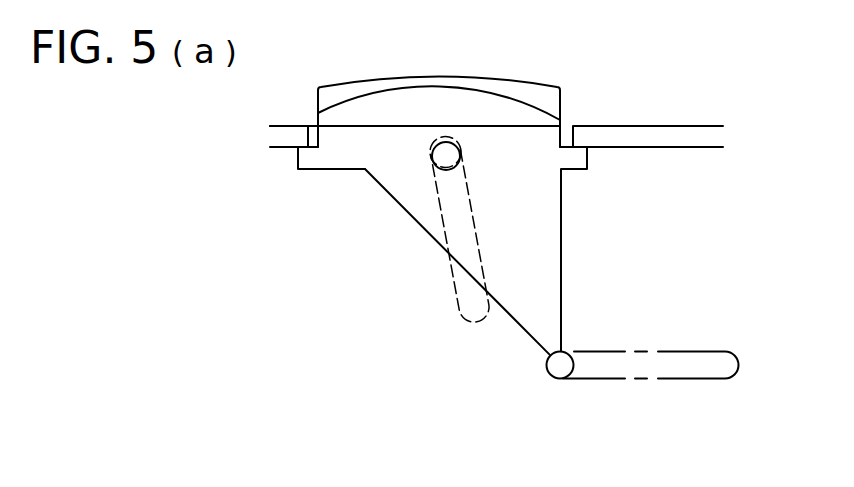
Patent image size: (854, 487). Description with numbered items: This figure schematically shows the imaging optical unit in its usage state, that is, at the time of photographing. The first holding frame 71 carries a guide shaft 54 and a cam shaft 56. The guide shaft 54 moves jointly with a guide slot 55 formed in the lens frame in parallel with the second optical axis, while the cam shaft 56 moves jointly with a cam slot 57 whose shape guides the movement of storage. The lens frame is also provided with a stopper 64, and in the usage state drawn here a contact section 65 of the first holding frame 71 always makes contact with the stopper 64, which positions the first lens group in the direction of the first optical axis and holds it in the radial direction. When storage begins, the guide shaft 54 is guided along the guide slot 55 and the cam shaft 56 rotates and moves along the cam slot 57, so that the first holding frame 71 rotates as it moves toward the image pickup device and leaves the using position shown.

The guide shaft 54 is at (558, 370).
The guide slot 55 is at (712, 370).
The cam shaft 56 is at (446, 156).
The cam slot 57 is at (437, 217).
The stopper 64 is at (293, 135).
The contact section 65 is at (300, 153).
The first holding frame 71 is at (528, 308).